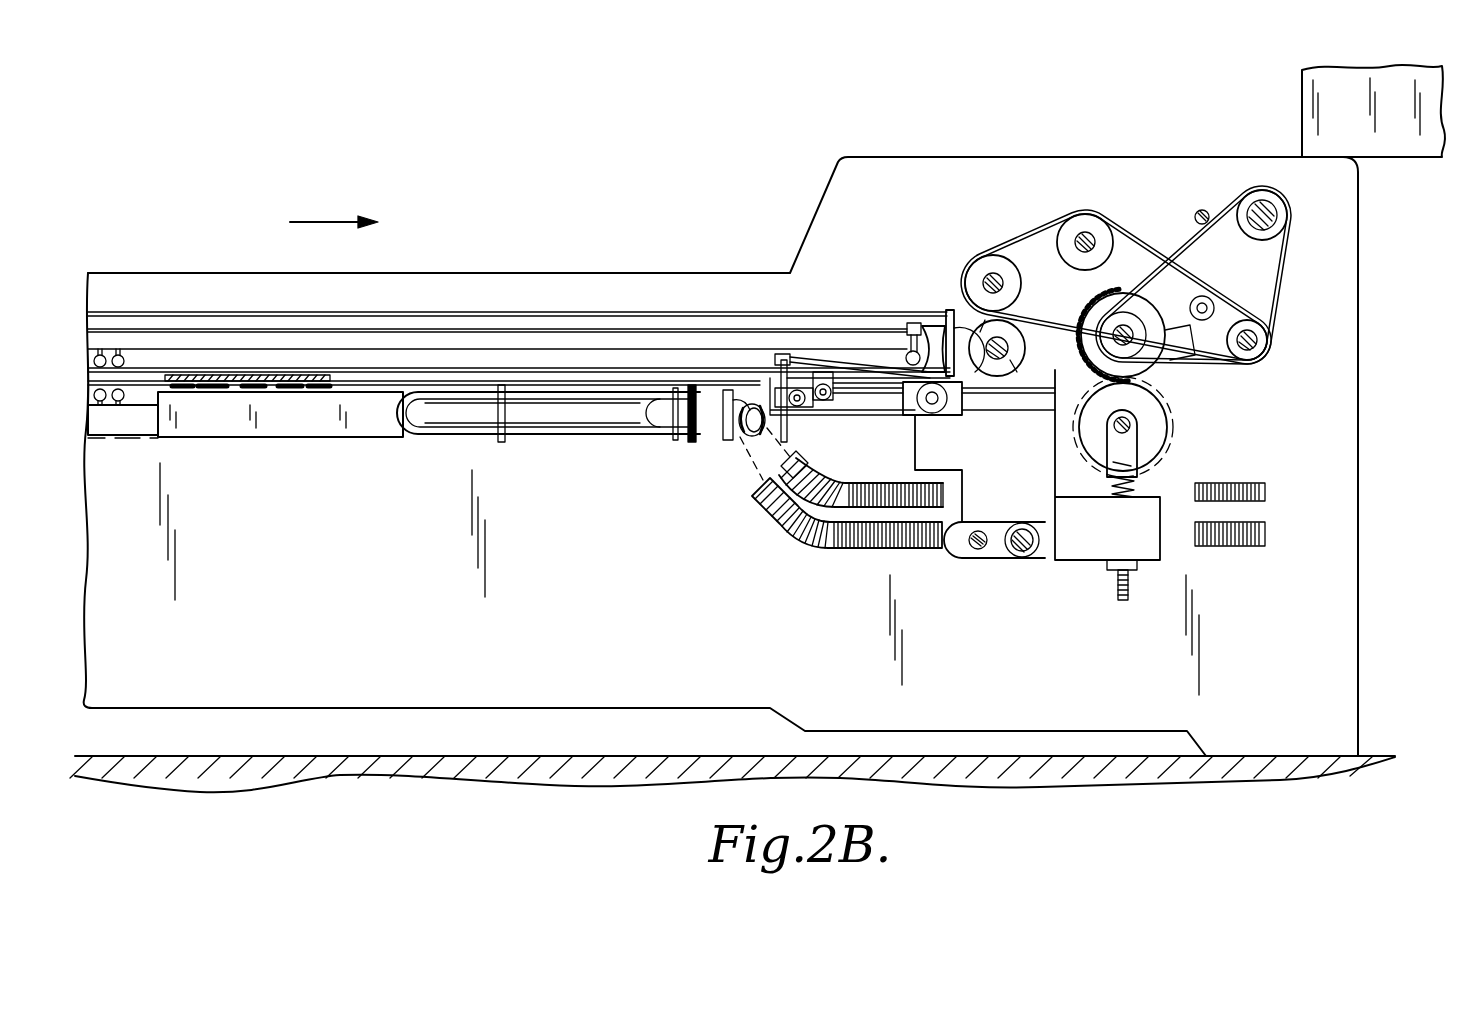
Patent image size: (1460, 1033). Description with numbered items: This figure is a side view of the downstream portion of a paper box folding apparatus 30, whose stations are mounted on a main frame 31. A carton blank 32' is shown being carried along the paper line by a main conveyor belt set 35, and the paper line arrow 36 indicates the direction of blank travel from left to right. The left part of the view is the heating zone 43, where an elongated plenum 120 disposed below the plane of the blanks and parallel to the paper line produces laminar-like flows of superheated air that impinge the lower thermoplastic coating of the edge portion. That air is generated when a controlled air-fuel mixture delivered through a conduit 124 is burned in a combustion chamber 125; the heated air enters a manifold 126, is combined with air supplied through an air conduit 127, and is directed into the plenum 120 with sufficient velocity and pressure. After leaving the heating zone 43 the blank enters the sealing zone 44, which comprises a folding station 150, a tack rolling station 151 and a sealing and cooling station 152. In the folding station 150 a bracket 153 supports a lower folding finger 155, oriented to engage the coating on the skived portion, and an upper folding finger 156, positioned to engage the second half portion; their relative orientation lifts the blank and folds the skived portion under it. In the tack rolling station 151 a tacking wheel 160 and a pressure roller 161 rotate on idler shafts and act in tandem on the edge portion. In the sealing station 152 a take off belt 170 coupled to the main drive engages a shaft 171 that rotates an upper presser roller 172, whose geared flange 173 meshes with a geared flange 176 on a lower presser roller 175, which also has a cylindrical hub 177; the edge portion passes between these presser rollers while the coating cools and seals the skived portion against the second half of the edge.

The paper box folding apparatus 30 is at (660, 189).
The main frame 31 is at (942, 157).
The carton blank 32' is at (519, 310).
The main conveyor belt set 35 is at (518, 312).
The paper line arrow 36 is at (335, 220).
The heating zone 43 is at (120, 628).
The sealing zone 44 is at (772, 628).
The elongated plenum 120 is at (293, 420).
The conduit 124 is at (868, 476).
The combustion chamber 125 is at (715, 433).
The manifold 126 is at (583, 417).
The air conduit 127 is at (790, 540).
The folding station 150 is at (866, 309).
The tack rolling station 151 is at (946, 303).
The sealing and cooling station 152 is at (1200, 373).
The bracket 153 is at (812, 410).
The lower folding finger 155 is at (860, 372).
The upper folding finger 156 is at (826, 362).
The tacking wheel 160 is at (937, 330).
The pressure roller 161 is at (1005, 376).
The take off belt 170 is at (1283, 280).
The shaft 171 is at (1123, 335).
The upper presser roller 172 is at (1086, 318).
The geared flange 173 is at (1116, 287).
The lower presser roller 175 is at (1150, 428).
The geared flange 176 is at (1093, 412).
The cylindrical hub 177 is at (1113, 455).